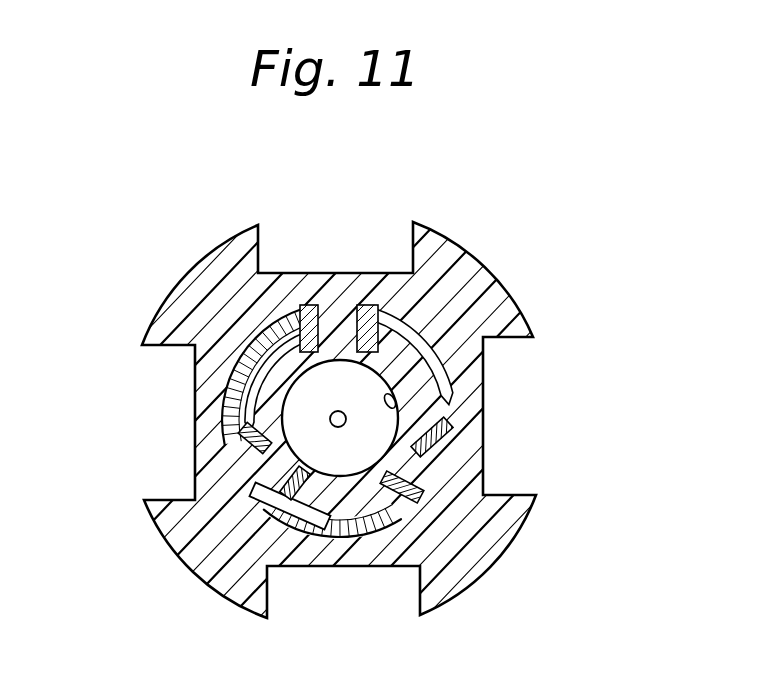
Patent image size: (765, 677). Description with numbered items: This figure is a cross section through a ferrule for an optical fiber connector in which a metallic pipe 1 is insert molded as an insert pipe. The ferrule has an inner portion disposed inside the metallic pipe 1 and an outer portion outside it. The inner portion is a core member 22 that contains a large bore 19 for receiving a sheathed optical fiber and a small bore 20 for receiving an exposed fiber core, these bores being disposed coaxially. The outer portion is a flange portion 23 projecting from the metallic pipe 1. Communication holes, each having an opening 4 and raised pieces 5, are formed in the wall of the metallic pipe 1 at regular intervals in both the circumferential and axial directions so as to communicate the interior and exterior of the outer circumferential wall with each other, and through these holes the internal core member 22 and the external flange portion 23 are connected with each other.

The metallic pipe 1 is at (232, 380).
The opening 4 is at (327, 314).
The raised pieces 5 is at (377, 503).
The large bore 19 is at (394, 404).
The small bore 20 is at (336, 423).
The core member 22 is at (325, 503).
The flange portion 23 is at (457, 252).